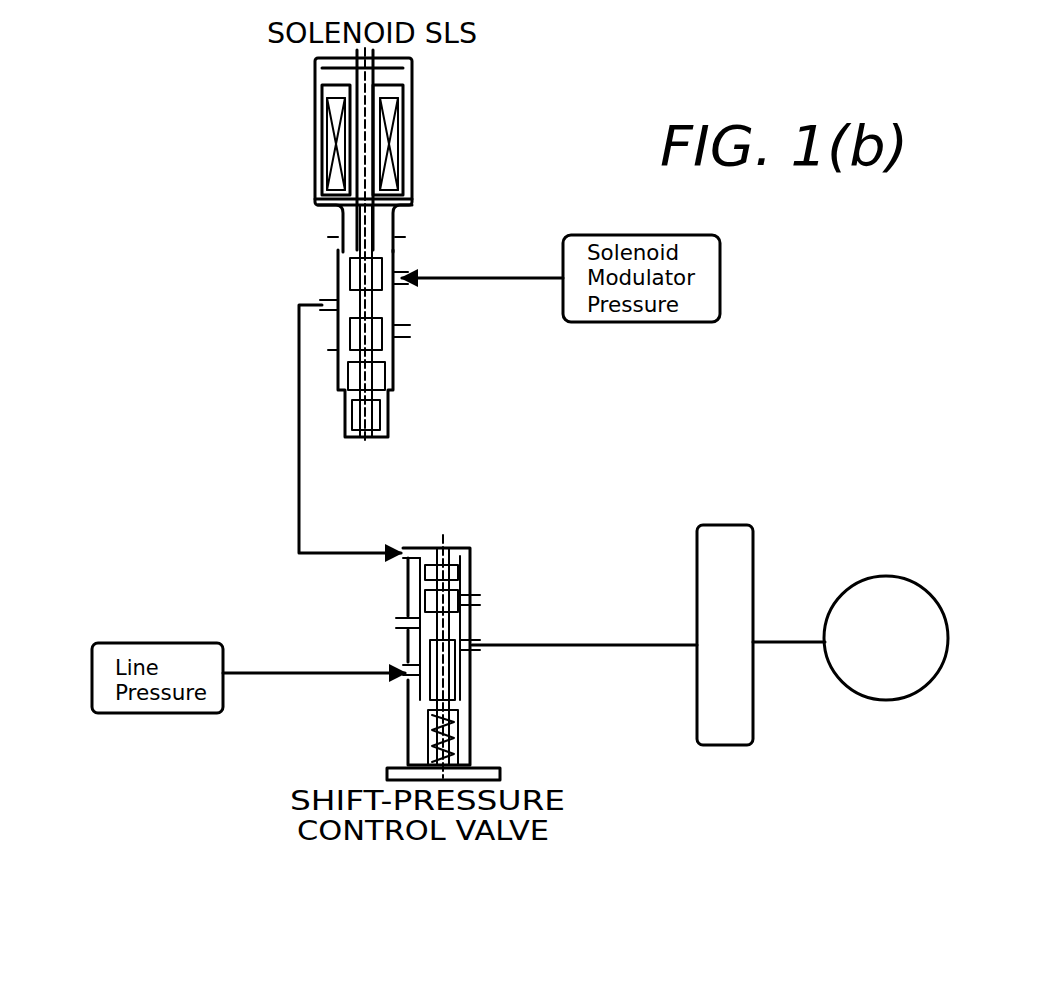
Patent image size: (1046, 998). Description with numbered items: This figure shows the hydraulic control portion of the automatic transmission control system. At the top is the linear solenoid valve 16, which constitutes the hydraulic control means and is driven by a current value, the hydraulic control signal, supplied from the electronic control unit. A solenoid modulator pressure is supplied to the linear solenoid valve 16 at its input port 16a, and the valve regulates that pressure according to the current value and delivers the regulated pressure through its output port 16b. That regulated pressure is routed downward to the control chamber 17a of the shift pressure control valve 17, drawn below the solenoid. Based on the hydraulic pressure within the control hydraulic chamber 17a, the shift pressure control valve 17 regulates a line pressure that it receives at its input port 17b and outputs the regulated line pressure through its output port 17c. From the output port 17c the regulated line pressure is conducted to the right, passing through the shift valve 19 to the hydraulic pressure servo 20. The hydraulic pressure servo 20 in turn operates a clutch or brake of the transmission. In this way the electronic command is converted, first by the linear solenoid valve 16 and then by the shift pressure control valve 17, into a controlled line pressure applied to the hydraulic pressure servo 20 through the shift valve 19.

The linear solenoid valve 16 is at (412, 140).
The input port 16a is at (398, 273).
The output port 16b is at (327, 300).
The shift pressure control valve 17 is at (479, 546).
The control chamber 17a is at (404, 546).
The input port 17b is at (403, 672).
The output port 17c is at (478, 645).
The shift valve 19 is at (742, 525).
The hydraulic pressure servo 20 is at (884, 575).